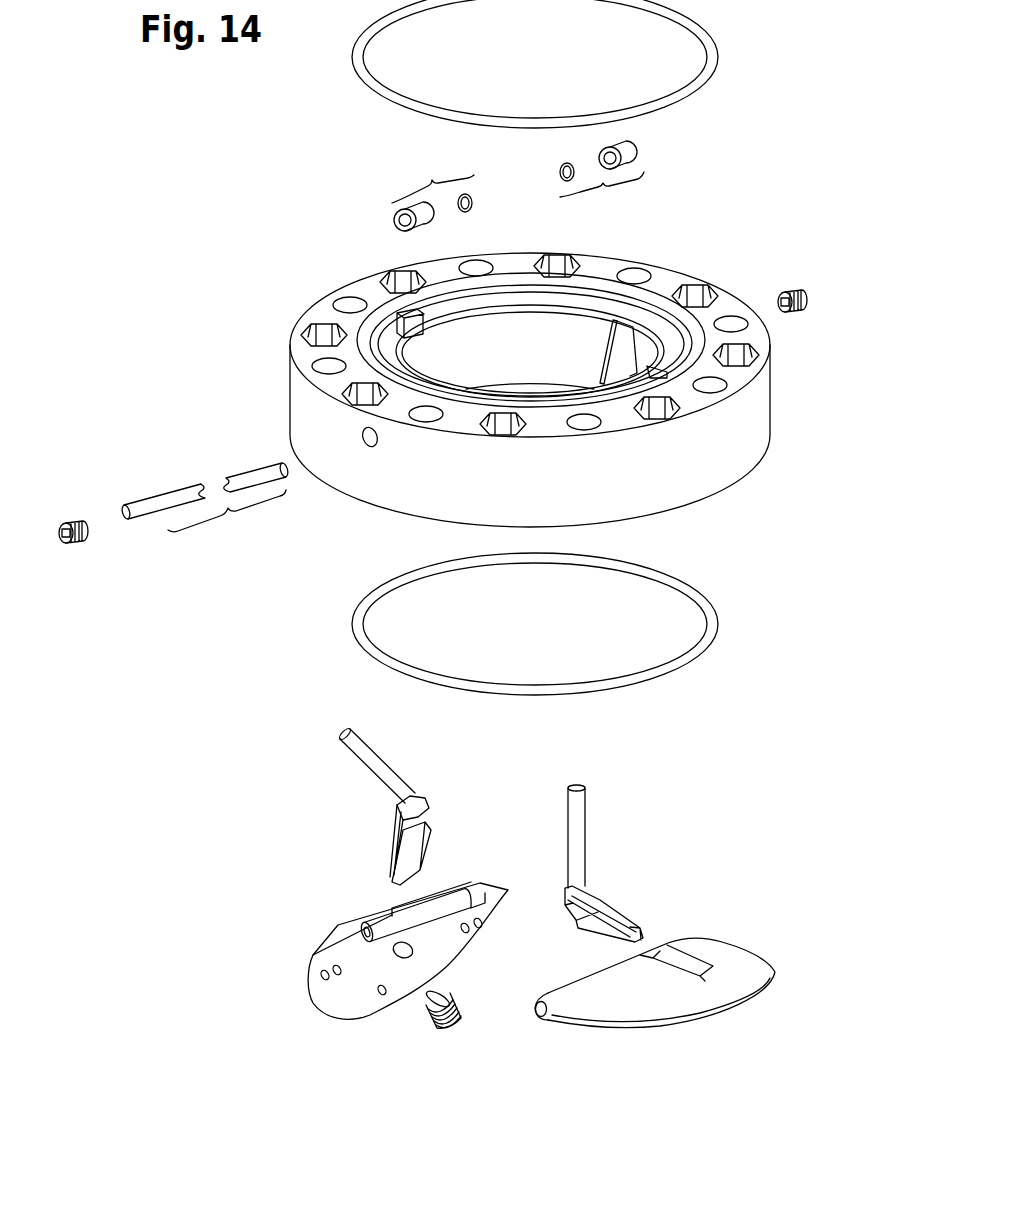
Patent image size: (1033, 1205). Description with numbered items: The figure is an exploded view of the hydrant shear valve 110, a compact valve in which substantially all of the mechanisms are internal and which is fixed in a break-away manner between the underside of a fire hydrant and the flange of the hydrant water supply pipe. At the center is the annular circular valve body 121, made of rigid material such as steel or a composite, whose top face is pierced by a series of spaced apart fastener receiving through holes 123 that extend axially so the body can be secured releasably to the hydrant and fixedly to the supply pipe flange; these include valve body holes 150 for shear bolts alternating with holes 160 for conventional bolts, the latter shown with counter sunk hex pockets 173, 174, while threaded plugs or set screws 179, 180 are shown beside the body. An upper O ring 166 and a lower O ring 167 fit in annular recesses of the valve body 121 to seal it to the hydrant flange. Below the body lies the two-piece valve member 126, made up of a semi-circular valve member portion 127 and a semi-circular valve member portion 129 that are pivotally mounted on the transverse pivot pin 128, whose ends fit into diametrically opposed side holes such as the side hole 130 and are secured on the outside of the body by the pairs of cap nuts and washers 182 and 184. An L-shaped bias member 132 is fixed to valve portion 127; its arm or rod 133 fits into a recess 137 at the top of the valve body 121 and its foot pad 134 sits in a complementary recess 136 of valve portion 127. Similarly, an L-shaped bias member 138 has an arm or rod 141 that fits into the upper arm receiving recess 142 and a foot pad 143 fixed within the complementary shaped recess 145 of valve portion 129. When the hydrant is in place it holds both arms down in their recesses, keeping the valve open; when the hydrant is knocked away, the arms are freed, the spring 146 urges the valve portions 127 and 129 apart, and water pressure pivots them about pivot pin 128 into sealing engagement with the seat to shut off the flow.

The hydrant shear valve 110 is at (335, 973).
The valve body 121 is at (742, 455).
The fastener receiving through holes 123 is at (522, 392).
The valve member 126 is at (384, 973).
The semi-circular valve member portion 127 is at (655, 994).
The pivot pin 128 is at (190, 490).
The semi-circular valve member portion 129 is at (355, 1012).
The side hole 130 is at (368, 448).
The L-shaped bias member 132 is at (627, 863).
The arm or rod 133 is at (578, 833).
The foot pad 134 is at (618, 913).
The recess 136 is at (690, 970).
The recess 137 is at (400, 314).
The L-shaped bias member 138 is at (404, 806).
The arm or rod 141 is at (383, 775).
The upper arm receiving recess 142 is at (665, 383).
The foot pad 143 is at (423, 857).
The recess 145 is at (383, 912).
The spring 146 is at (460, 1010).
The valve body hole 150 is at (428, 421).
The hole 160 is at (738, 325).
The upper O ring 166 is at (687, 90).
The lower O ring 167 is at (682, 668).
The socket pocket 173 is at (342, 389).
The socket pocket 174 is at (690, 287).
The set screw 179 is at (80, 523).
The set screw 180 is at (790, 292).
The cap nut and washer pair 182 is at (433, 197).
The cap nut and washer pair 184 is at (602, 177).